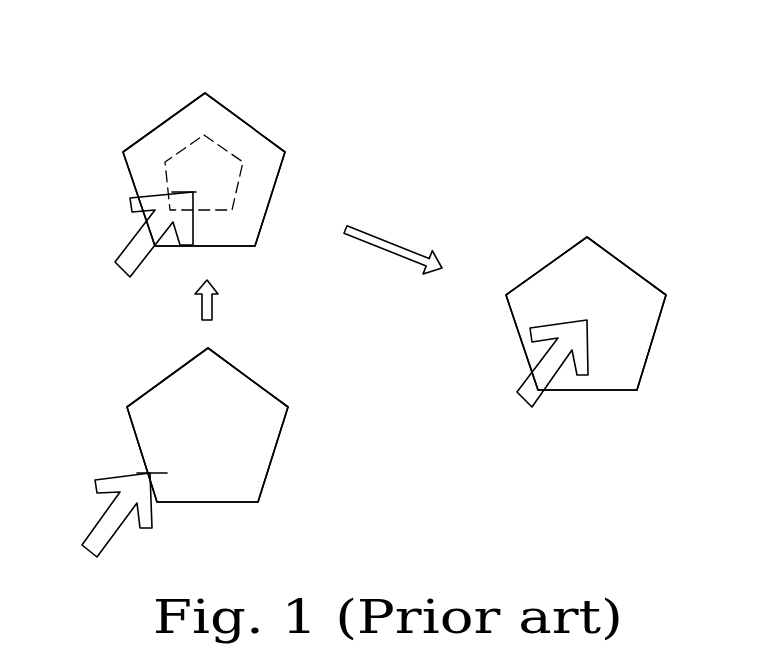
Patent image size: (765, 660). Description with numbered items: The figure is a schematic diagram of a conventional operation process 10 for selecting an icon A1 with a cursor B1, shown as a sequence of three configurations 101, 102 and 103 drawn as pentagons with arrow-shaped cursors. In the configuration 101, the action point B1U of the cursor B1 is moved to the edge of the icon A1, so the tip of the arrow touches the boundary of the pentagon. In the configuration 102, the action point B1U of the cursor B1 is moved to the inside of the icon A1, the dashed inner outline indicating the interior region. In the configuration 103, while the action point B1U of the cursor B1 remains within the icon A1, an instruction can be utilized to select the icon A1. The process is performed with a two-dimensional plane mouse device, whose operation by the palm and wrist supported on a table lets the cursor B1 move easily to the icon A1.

The operation process 10 is at (405, 86).
The configuration 101 is at (302, 367).
The configuration 102 is at (299, 110).
The configuration 103 is at (680, 255).
The icon A1 is at (177, 113).
The cursor B1 is at (130, 250).
The action point B1U is at (182, 192).